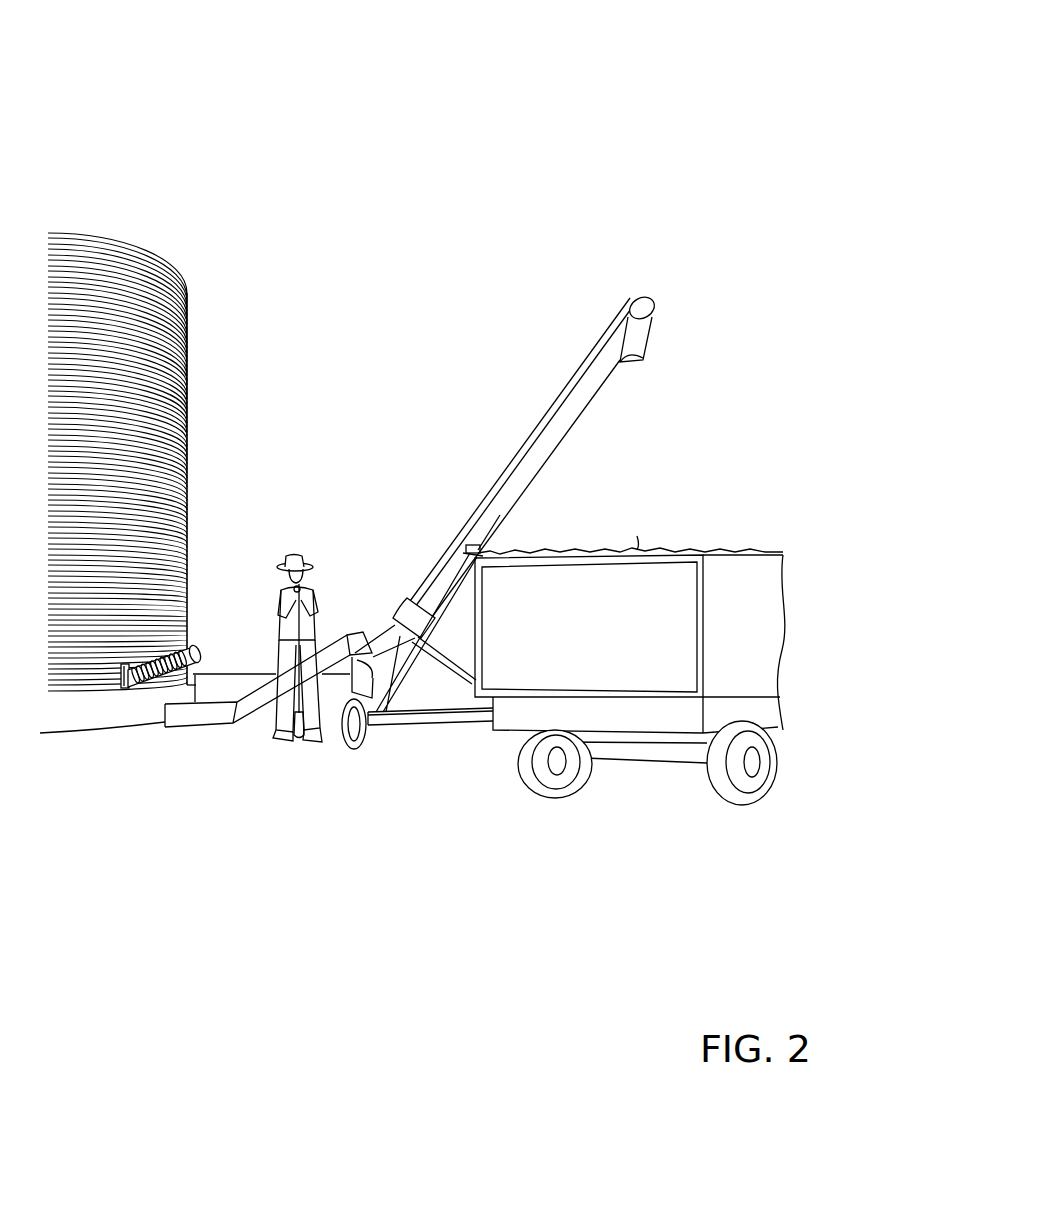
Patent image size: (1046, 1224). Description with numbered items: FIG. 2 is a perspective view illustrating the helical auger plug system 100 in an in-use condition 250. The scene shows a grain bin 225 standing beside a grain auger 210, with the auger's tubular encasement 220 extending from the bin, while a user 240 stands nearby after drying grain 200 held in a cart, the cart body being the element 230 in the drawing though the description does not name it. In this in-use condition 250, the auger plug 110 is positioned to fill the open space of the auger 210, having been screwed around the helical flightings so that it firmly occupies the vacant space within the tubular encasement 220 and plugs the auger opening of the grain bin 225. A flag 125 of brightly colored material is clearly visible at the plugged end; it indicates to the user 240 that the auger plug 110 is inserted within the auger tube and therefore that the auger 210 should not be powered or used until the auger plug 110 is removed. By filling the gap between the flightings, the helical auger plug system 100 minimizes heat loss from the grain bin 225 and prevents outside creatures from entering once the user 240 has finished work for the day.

The helical auger plug system 100 is at (615, 80).
The auger plug 110 is at (193, 645).
The flag 125 is at (205, 678).
The grain 200 is at (677, 548).
The auger 210 is at (145, 682).
The tubular encasement 220 is at (167, 650).
The grain bin 225 is at (192, 330).
The grain container 230 is at (598, 633).
The user 240 is at (289, 545).
The in-use condition 250 is at (640, 120).